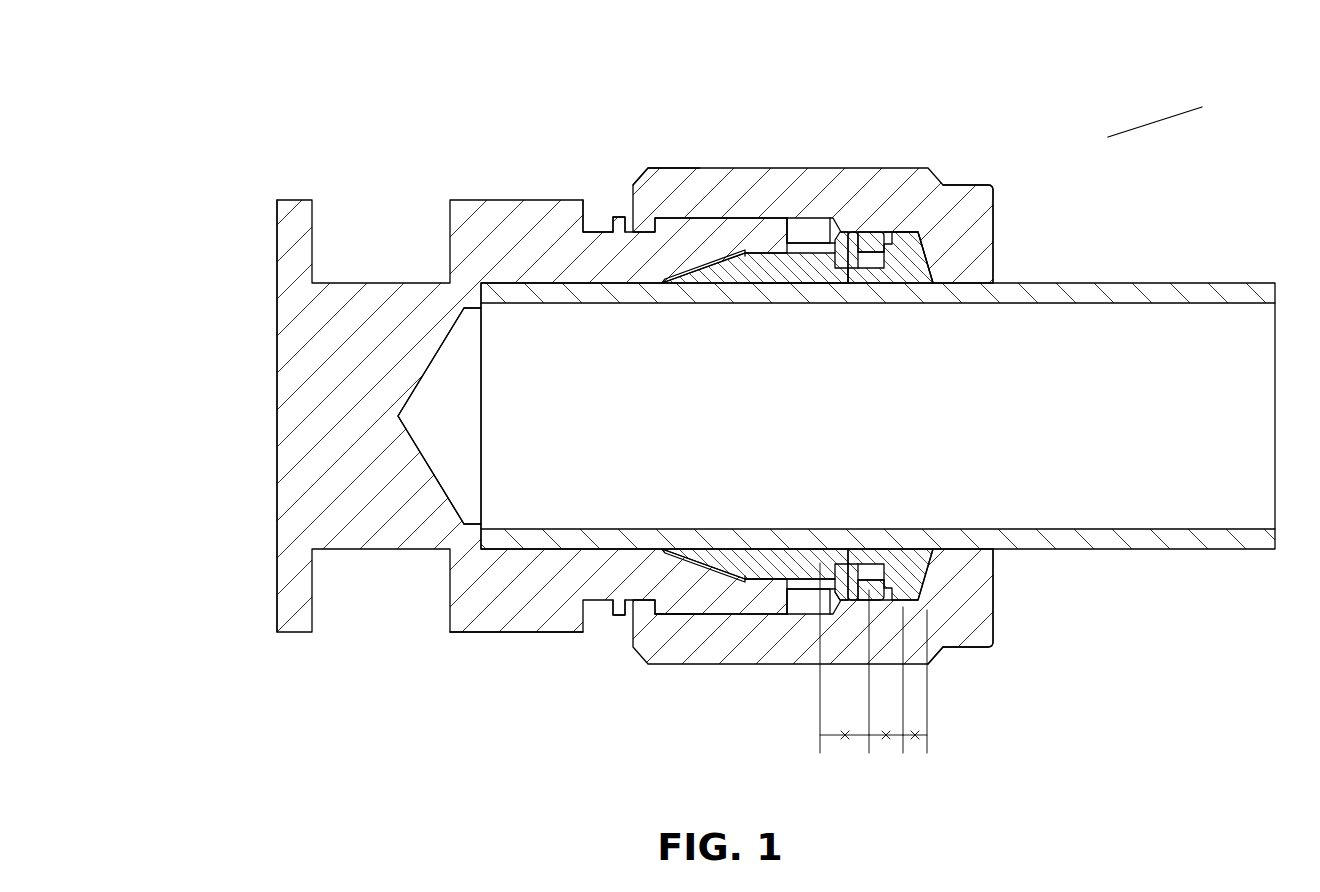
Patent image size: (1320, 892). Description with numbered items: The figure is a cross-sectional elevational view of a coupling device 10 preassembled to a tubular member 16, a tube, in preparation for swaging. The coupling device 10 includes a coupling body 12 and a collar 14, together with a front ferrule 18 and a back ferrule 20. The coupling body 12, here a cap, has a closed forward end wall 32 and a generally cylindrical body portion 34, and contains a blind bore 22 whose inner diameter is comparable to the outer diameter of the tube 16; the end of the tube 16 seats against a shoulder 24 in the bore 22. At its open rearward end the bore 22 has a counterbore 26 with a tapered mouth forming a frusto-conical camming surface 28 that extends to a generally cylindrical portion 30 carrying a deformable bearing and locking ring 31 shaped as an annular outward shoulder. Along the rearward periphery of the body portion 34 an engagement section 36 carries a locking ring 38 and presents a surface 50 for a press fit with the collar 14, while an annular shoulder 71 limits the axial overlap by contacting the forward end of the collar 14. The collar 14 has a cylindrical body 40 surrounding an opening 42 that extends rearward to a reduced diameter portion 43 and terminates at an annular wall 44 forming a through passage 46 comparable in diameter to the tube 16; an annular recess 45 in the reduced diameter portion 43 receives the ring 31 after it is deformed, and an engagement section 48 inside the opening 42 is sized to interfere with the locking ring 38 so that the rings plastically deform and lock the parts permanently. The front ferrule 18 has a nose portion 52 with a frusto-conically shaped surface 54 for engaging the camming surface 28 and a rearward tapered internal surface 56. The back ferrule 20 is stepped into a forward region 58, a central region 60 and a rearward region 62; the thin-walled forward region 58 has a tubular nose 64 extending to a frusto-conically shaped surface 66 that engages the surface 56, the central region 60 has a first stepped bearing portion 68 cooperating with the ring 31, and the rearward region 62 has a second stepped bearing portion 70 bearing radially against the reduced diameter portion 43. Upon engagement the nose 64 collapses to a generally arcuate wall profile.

The coupling device 10 is at (1100, 140).
The coupling body 12 is at (300, 208).
The collar 14 is at (1000, 264).
The tubular member 16 is at (1163, 303).
The front ferrule 18 is at (735, 277).
The back ferrule 20 is at (898, 275).
The blind bore 22 is at (430, 462).
The shoulder 24 is at (480, 542).
The counterbore 26 is at (702, 562).
The frusto-conical camming surface 28 is at (723, 568).
The cylindrical portion 30 is at (815, 598).
The bearing and locking ring 31 is at (837, 220).
The closed forward end wall 32 is at (290, 462).
The cylindrical body portion 34 is at (486, 618).
The engagement section 36 is at (738, 191).
The locking ring 38 is at (620, 216).
The cylindrical body 40 is at (725, 650).
The opening 42 is at (628, 620).
The reduced diameter portion 43 is at (897, 585).
The annular wall 44 is at (985, 605).
The annular recess 45 is at (858, 222).
The through passage 46 is at (968, 546).
The engagement section 48 is at (672, 592).
The surface 50 is at (675, 216).
The nose portion 52 is at (703, 280).
The frusto-conically shaped surface 54 is at (743, 220).
The tapered internal surface 56 is at (823, 558).
The forward region 58 is at (843, 740).
The central region 60 is at (886, 740).
The rearward region 62 is at (915, 740).
The nose 64 is at (830, 278).
The frusto-conically shaped surface 66 is at (825, 270).
The first stepped bearing portion 68 is at (892, 232).
The second stepped bearing portion 70 is at (920, 247).
The annular shoulder 71 is at (590, 215).